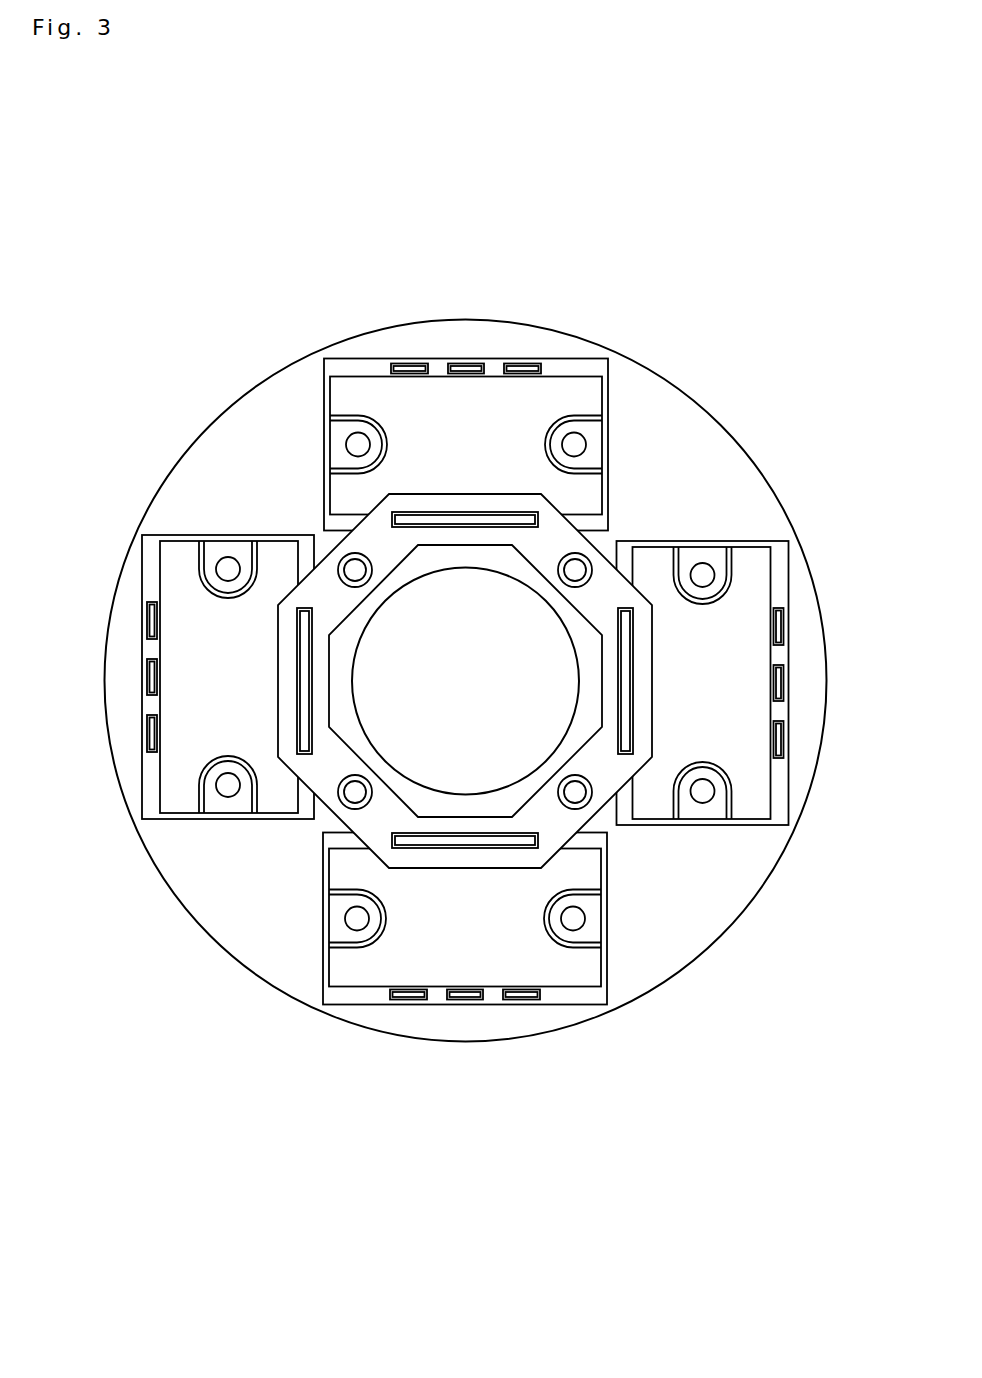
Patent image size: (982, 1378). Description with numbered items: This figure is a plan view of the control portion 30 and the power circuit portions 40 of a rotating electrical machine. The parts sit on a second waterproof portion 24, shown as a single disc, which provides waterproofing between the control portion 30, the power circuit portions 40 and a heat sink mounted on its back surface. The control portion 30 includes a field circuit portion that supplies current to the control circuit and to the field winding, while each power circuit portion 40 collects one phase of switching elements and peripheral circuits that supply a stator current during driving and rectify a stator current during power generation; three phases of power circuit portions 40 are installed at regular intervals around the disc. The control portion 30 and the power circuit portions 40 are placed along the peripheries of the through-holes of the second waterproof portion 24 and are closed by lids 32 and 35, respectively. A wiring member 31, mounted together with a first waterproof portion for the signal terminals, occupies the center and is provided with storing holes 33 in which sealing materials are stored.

The second waterproof portion 24 is at (690, 462).
The control portion 30 is at (355, 366).
The wiring member 31 is at (328, 767).
The lid 32 is at (364, 403).
The slot 33 is at (459, 518).
The lid 35 is at (183, 772).
The power circuit portion 40 is at (775, 563).